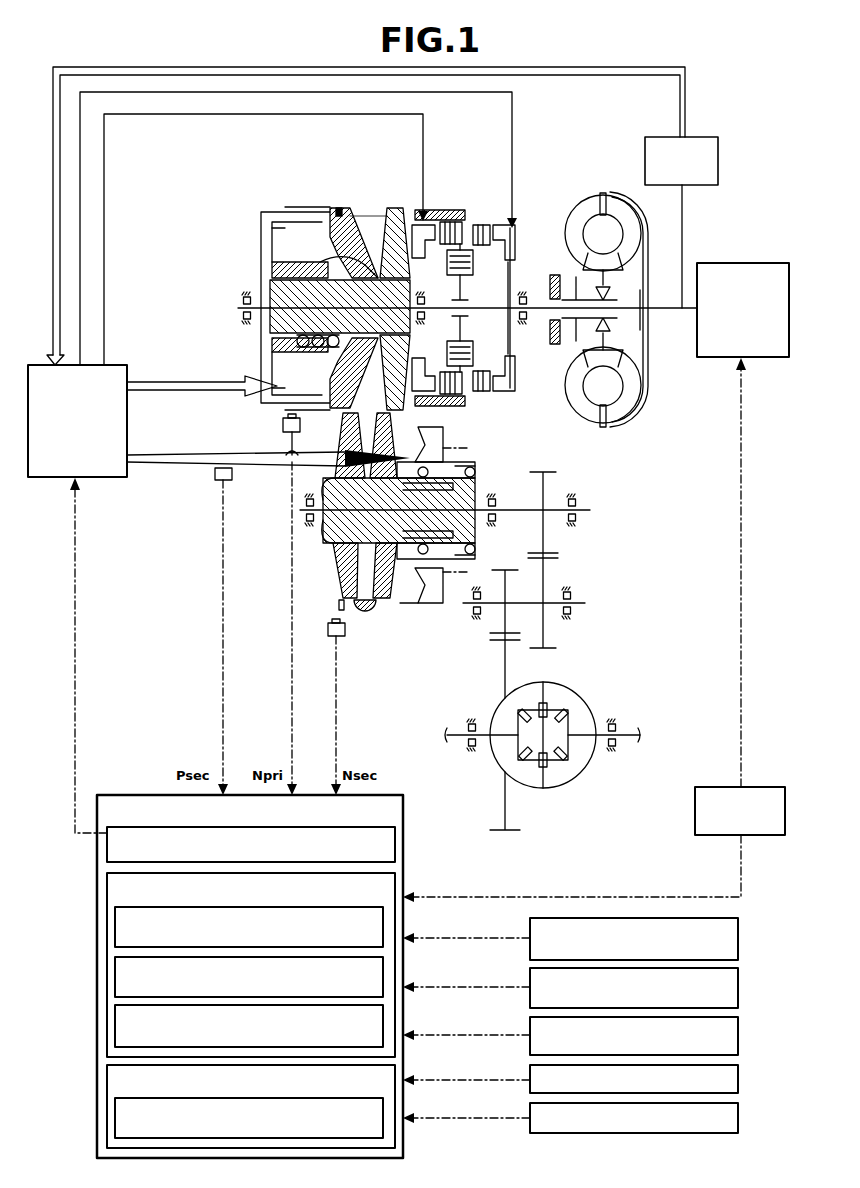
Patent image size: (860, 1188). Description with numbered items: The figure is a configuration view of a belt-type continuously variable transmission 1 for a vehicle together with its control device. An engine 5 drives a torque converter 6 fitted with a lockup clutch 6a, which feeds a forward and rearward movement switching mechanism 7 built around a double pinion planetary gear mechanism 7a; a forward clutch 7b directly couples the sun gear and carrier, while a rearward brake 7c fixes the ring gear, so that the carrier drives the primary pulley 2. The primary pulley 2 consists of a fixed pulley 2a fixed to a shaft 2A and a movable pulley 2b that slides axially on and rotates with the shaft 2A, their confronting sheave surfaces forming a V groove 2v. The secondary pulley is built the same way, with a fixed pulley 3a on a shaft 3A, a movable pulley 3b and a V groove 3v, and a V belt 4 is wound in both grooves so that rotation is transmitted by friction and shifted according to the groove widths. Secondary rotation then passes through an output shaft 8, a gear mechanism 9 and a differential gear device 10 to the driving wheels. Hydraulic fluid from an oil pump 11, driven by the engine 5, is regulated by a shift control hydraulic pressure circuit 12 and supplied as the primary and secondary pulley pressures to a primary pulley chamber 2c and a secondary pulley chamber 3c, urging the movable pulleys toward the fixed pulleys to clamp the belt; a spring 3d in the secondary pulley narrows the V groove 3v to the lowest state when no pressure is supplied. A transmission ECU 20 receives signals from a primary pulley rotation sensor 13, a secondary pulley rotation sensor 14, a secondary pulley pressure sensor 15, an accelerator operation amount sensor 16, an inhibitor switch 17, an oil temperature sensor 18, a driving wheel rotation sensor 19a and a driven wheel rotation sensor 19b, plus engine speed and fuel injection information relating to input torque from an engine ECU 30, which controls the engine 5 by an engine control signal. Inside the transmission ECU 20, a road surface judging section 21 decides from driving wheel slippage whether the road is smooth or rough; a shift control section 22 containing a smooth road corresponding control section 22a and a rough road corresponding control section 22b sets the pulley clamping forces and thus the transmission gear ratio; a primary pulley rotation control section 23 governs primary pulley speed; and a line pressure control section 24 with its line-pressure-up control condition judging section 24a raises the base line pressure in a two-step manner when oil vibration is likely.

The continuously variable transmission 1 is at (210, 203).
The primary pulley 2 is at (345, 190).
The fixed pulley 2a is at (396, 208).
The movable pulley 2b is at (339, 210).
The primary pulley chamber 2c is at (285, 226).
The V groove 2v is at (370, 230).
The shaft 2A is at (280, 290).
The shaft 3A is at (318, 531).
The fixed pulley 3a is at (343, 580).
The movable pulley 3b is at (385, 610).
The secondary pulley chamber 3c is at (405, 598).
The spring 3d is at (445, 462).
The V groove 3v is at (366, 612).
The V belt 4 is at (330, 252).
The engine 5 is at (745, 263).
The torque converter 6 is at (613, 279).
The lockup clutch 6a is at (640, 290).
The forward and rearward movement switching mechanism 7 is at (485, 276).
The double pinion planetary gear mechanism 7a is at (480, 262).
The forward clutch 7b is at (490, 224).
The rearward brake 7c is at (462, 225).
The output shaft 8 is at (517, 508).
The gear mechanism 9 is at (578, 545).
The differential gear device 10 is at (603, 686).
The oil pump 11 is at (718, 160).
The shift control hydraulic pressure circuit 12 is at (110, 477).
The primary pulley rotation sensor 13 is at (283, 425).
The secondary pulley rotation sensor 14 is at (328, 630).
The secondary pulley pressure sensor 15 is at (215, 474).
The accelerator operation amount sensor 16 is at (738, 940).
The inhibitor switch 17 is at (738, 989).
The oil temperature sensor 18 is at (738, 1037).
The driving wheel rotation sensor 19a is at (738, 1080).
The driven wheel rotation sensor 19b is at (738, 1118).
The transmission ECU 20 is at (97, 812).
The road surface judging section 21 is at (107, 845).
The shift control section 22 is at (107, 887).
The smooth road corresponding control section 22a is at (115, 925).
The rough road corresponding control section 22b is at (115, 972).
The primary pulley rotation control section 23 is at (115, 1025).
The line pressure control section 24 is at (107, 1080).
The line-pressure-up control condition judging section 24a is at (115, 1118).
The engine ECU 30 is at (695, 810).